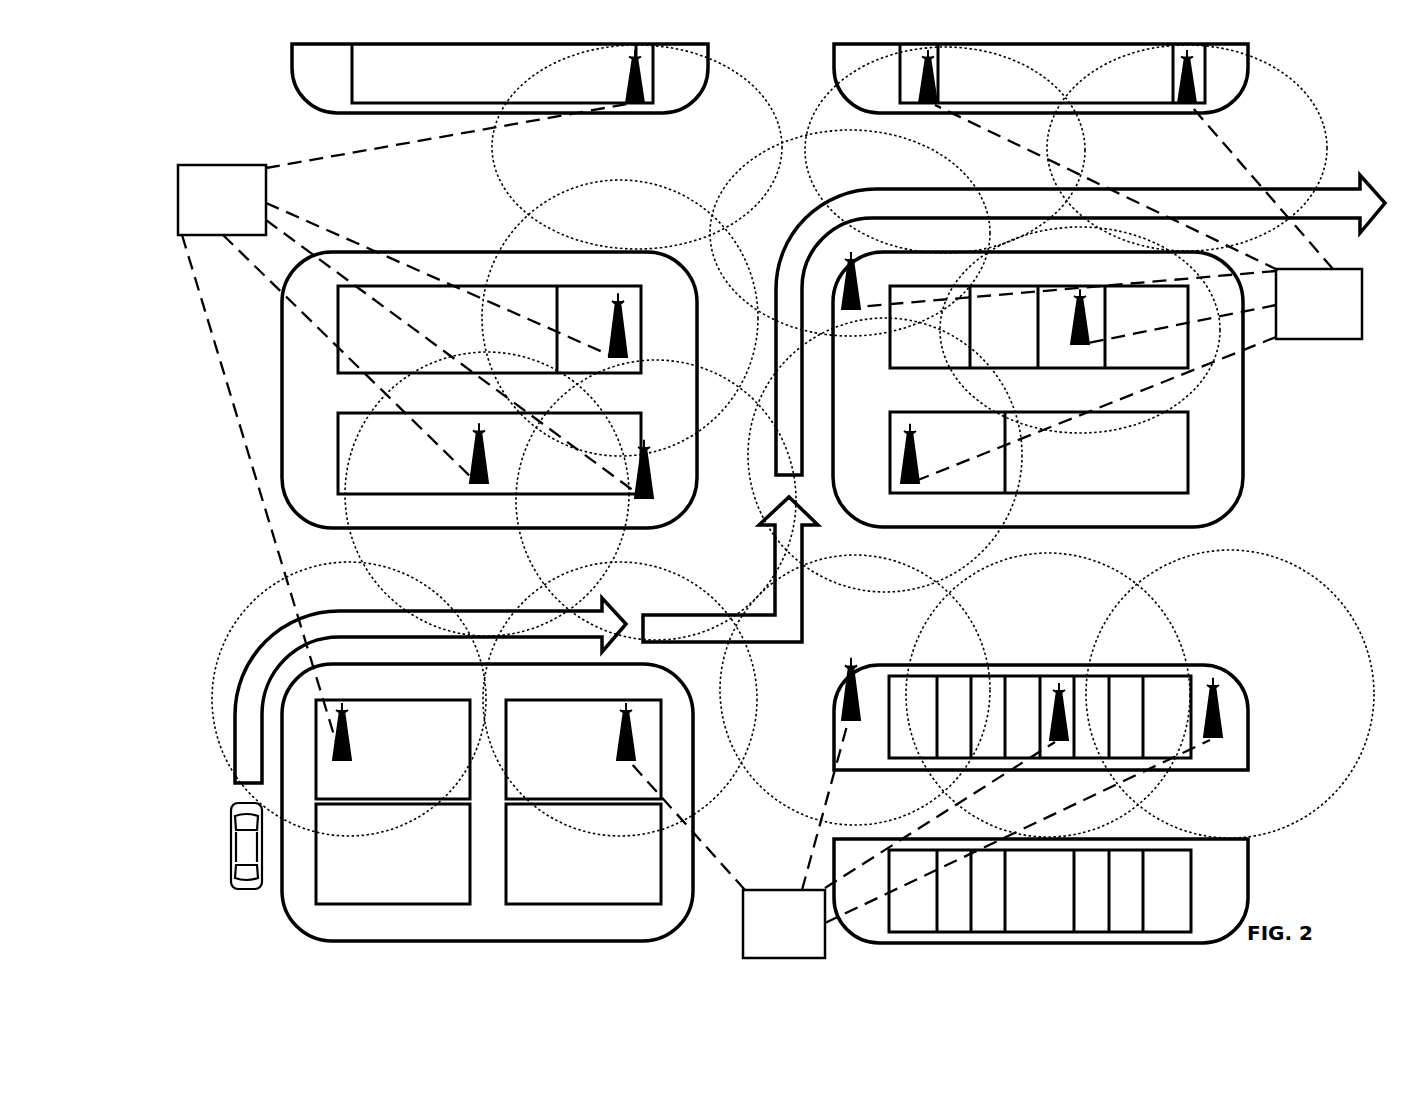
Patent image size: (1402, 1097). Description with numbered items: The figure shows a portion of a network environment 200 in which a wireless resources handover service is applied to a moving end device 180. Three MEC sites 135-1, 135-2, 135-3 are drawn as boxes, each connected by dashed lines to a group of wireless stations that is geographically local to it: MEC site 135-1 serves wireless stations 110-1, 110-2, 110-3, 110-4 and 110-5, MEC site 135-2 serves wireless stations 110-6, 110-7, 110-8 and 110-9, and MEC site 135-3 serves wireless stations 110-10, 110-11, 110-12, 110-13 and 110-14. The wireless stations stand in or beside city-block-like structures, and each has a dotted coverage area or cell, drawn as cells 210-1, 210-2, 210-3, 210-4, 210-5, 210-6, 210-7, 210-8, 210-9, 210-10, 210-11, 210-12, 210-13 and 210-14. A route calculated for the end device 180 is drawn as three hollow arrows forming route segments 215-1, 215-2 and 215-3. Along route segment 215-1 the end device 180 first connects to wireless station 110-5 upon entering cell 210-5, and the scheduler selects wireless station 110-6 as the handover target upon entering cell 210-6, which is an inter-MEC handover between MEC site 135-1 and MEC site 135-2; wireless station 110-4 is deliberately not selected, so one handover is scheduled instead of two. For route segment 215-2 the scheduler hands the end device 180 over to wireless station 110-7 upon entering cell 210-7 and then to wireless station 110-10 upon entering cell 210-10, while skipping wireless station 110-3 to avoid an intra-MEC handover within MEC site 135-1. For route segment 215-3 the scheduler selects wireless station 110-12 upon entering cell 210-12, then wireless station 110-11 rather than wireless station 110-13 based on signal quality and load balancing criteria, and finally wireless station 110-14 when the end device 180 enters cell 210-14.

The network environment 200 is at (254, 96).
The wireless station 110-1 is at (638, 105).
The wireless station 110-2 is at (620, 358).
The wireless station 110-3 is at (644, 500).
The wireless station 110-4 is at (478, 484).
The wireless station 110-5 is at (352, 757).
The wireless station 110-6 is at (625, 758).
The wireless station 110-7 is at (848, 720).
The wireless station 110-8 is at (1058, 742).
The wireless station 110-9 is at (1215, 738).
The wireless station 110-10 is at (926, 505).
The wireless station 110-11 is at (1082, 346).
The wireless station 110-12 is at (853, 310).
The wireless station 110-13 is at (928, 104).
The wireless station 110-14 is at (1187, 105).
The MEC site 135-1 is at (410, 429).
The MEC site 135-2 is at (920, 840).
The MEC site 135-3 is at (1109, 292).
The end device 180 is at (228, 815).
The coverage area (cell) 210-1 is at (503, 196).
The coverage area (cell) 210-2 is at (492, 276).
The coverage area (cell) 210-3 is at (765, 562).
The coverage area (cell) 210-4 is at (335, 528).
The coverage area (cell) 210-5 is at (265, 590).
The coverage area (cell) 210-6 is at (620, 832).
The coverage area (cell) 210-7 is at (752, 800).
The coverage area (cell) 210-8 is at (1060, 572).
The coverage area (cell) 210-9 is at (1236, 566).
The coverage area (cell) 210-10 is at (1035, 497).
The coverage area (cell) 210-11 is at (1192, 384).
The coverage area (cell) 210-12 is at (832, 130).
The coverage area (cell) 210-13 is at (943, 50).
The coverage area (cell) 210-14 is at (1287, 90).
The route segment 215-1 is at (262, 648).
The route segment 215-2 is at (803, 628).
The route segment 215-3 is at (1372, 173).